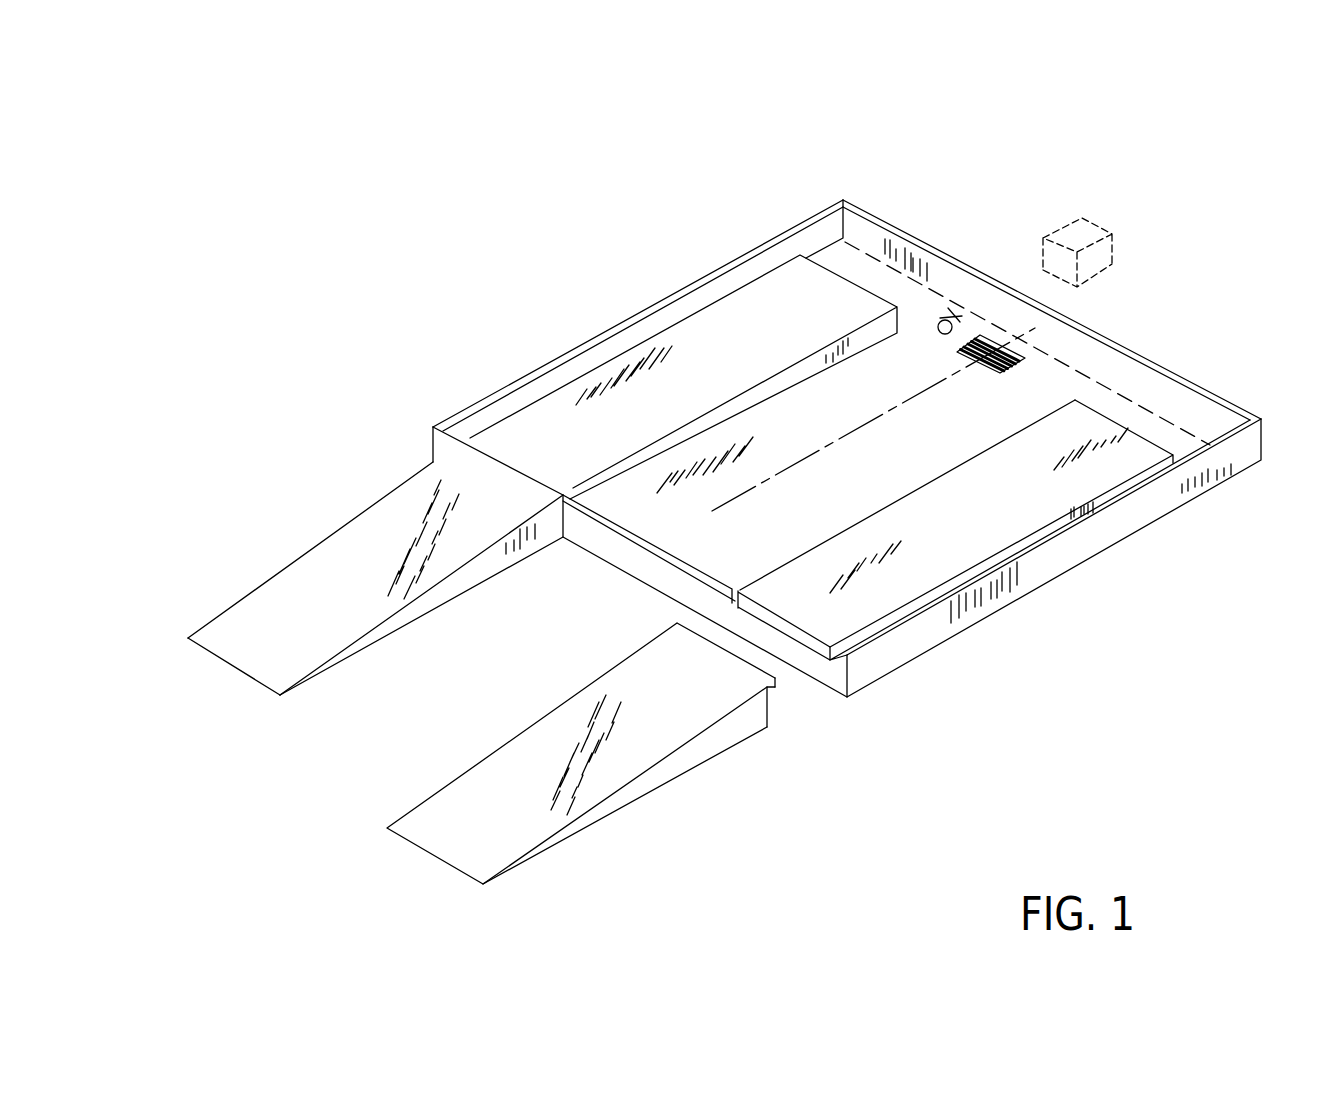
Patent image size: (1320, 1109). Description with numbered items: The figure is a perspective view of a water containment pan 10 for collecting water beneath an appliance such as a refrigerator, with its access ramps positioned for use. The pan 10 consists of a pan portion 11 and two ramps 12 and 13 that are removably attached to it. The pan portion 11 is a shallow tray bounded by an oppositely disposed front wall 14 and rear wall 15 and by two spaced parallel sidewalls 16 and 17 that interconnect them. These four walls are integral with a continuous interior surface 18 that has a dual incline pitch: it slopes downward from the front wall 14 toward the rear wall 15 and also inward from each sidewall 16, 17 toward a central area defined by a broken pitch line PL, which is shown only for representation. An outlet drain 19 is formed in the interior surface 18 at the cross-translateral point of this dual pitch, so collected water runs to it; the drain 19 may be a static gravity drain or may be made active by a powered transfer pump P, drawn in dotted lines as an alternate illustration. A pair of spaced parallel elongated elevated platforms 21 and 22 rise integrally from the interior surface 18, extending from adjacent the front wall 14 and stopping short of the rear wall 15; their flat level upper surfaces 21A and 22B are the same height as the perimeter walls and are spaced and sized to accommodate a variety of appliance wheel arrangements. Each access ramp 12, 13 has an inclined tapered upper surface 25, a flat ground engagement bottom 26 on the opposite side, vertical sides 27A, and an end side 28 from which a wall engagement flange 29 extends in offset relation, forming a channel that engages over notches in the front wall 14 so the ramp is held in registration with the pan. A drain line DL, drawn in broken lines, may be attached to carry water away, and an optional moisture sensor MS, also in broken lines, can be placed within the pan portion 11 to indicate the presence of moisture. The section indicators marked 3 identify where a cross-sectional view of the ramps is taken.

The water containment pan 10 is at (1044, 198).
The pan portion 11 is at (767, 236).
The access ramp 12 is at (330, 527).
The access ramp 13 is at (657, 792).
The front wall 14 is at (658, 571).
The rear wall 15 is at (1167, 391).
The sidewall 16 is at (636, 334).
The sidewall 17 is at (1047, 570).
The interior surface 18 is at (912, 446).
The outlet drain 19 is at (1035, 345).
The elevated platform 21 is at (543, 396).
The upper surface 21A is at (727, 337).
The elevated platform 22 is at (1123, 479).
The upper surface 22B is at (948, 530).
The inclined tapered upper surface 25 is at (304, 589).
The flat ground engagement bottom 26 is at (236, 594).
The vertical side 27A is at (397, 629).
The end side 28 is at (772, 716).
The wall engagement flange 29 is at (781, 686).
The moisture sensor MS is at (950, 303).
The drain line DL is at (1017, 289).
The pitch line PL is at (737, 495).
The powered transfer pump P is at (1087, 217).
The section line 3- 3 is at (585, 588).